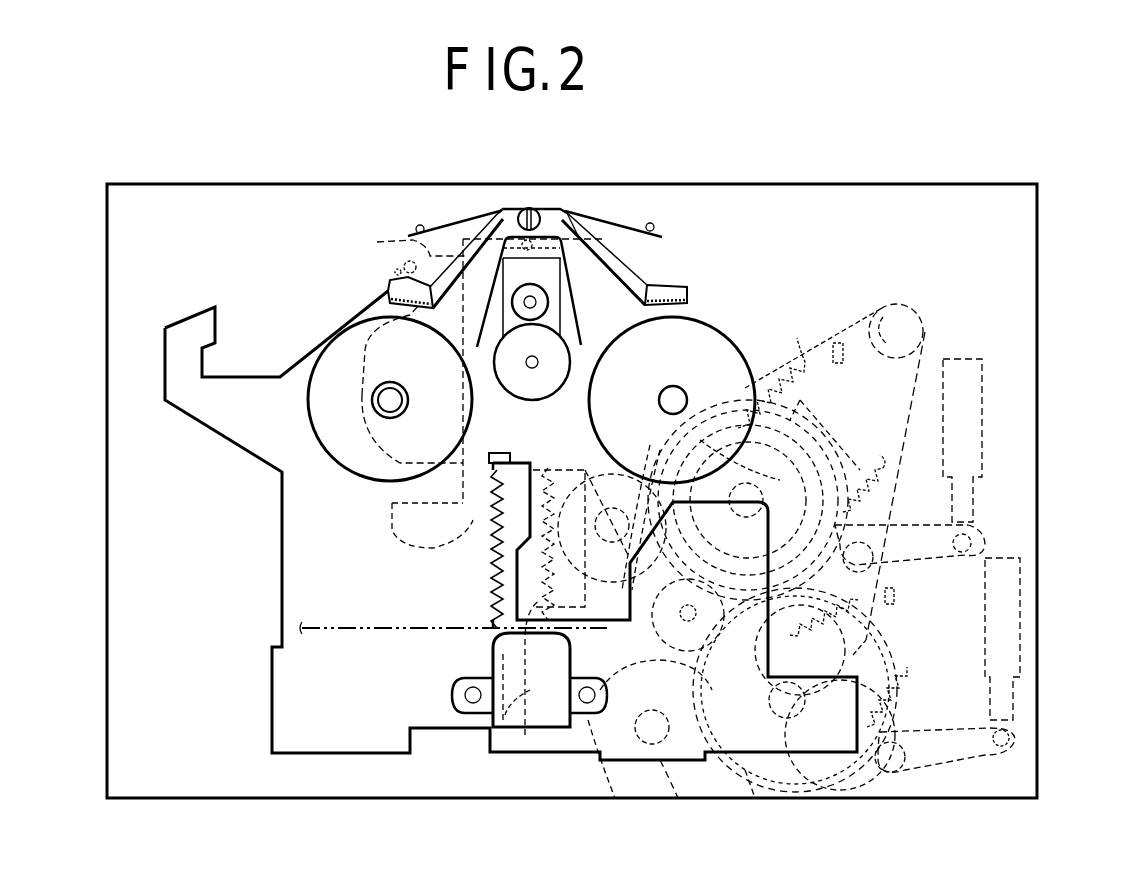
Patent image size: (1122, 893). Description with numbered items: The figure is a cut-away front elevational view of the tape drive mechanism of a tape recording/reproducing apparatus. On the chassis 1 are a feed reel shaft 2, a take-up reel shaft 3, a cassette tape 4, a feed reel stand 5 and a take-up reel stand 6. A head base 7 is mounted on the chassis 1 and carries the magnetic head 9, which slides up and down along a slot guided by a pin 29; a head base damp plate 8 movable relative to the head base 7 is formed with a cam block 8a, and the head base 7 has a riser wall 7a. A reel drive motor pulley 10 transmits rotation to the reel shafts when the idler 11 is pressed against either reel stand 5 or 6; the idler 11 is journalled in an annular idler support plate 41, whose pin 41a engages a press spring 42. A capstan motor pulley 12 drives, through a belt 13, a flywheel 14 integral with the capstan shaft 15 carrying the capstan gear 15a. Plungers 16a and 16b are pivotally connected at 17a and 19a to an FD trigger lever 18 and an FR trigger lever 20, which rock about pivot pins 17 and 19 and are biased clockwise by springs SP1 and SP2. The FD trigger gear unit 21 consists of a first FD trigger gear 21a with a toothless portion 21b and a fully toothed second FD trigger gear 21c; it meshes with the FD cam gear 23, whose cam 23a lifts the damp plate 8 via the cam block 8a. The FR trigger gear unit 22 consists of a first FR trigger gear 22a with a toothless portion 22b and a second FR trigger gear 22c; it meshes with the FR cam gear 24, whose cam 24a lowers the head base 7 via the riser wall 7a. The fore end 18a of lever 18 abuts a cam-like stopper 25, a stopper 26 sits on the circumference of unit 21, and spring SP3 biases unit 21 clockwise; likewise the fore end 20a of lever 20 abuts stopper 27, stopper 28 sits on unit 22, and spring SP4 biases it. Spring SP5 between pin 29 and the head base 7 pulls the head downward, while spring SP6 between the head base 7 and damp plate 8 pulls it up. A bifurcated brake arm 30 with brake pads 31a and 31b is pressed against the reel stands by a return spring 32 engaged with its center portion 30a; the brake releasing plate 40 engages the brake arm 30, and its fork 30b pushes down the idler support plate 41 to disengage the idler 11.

The chassis 1 is at (337, 190).
The feed reel shaft 2 is at (397, 392).
The take-up reel shaft 3 is at (666, 393).
The cassette tape 4 is at (420, 615).
The feed reel stand 5 is at (322, 407).
The take-up reel stand 6 is at (722, 346).
The head base 7 is at (284, 701).
The riser wall 7a is at (685, 794).
The head base damp plate 8 is at (492, 593).
The cam block 8a is at (530, 460).
The magnetic head 9 is at (492, 652).
The reel drive motor pulley 10 is at (548, 299).
The idler 11 is at (546, 392).
The capstan motor pulley 12 is at (921, 319).
The belt 13 is at (905, 450).
The flywheel 14 is at (833, 406).
The capstan shaft 15 is at (692, 601).
The capstan gear 15a is at (672, 642).
The plunger 16a is at (975, 384).
The plunger 16b is at (1025, 583).
The pivot pin 17 is at (895, 598).
The pivotal connection 17a is at (970, 538).
The FD trigger lever 18 is at (927, 578).
The fore end of FD trigger lever 18a is at (822, 550).
The pivot pin 19 is at (899, 745).
The pivotal connection 19a is at (1010, 736).
The FR trigger lever 20 is at (960, 774).
The fore end of FR trigger lever 20a is at (826, 790).
The FD trigger gear unit 21 is at (810, 437).
The first FD trigger gear 21a is at (805, 412).
The toothless portion 21b is at (748, 525).
The second FD trigger gear 21c is at (748, 500).
The FR trigger gear unit 22 is at (870, 790).
The first FR trigger gear 22a is at (795, 612).
The toothless portion 22b is at (690, 678).
The second FR trigger gear 22c is at (770, 799).
The FD cam gear 23 is at (596, 626).
The cam 23a is at (600, 498).
The FR cam gear 24 is at (597, 750).
The cam 24a is at (611, 774).
The cam-like stopper 25 is at (756, 482).
The stopper 26 is at (736, 474).
The cam-like stopper 27 is at (880, 652).
The stopper 28 is at (766, 701).
The pin 29 is at (485, 740).
The brake arm 30 is at (634, 284).
The center portion of brake arm 30a is at (535, 213).
The fork 30b is at (567, 213).
The brake pad 31a is at (386, 299).
The brake pad 31b is at (690, 306).
The return spring 32 is at (452, 223).
The brake releasing plate 40 is at (410, 507).
The idler support plate 41 is at (578, 318).
The pin 41a is at (557, 367).
The press spring 42 is at (401, 345).
The spring SP1 is at (890, 500).
The spring SP2 is at (905, 691).
The spring SP3 is at (789, 368).
The spring SP4 is at (868, 632).
The spring SP5 is at (490, 584).
The spring SP6 is at (540, 462).